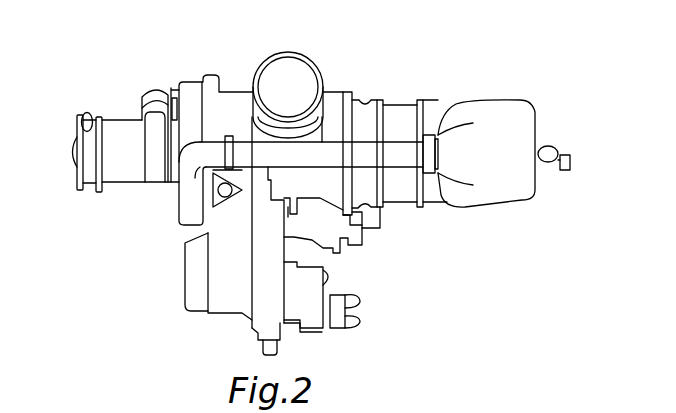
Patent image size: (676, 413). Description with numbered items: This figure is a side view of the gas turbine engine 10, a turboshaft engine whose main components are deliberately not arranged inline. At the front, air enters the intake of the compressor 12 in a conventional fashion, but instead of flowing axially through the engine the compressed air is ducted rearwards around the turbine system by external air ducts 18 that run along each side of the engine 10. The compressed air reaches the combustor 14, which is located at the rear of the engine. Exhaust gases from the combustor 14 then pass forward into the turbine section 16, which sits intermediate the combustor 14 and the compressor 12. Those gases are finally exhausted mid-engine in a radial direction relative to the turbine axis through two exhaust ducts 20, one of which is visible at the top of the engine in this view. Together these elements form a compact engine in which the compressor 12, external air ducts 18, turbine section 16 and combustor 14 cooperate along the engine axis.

The gas turbine engine 10 is at (108, 48).
The compressor 12 is at (125, 125).
The combustor 14 is at (480, 100).
The turbine section 16 is at (368, 100).
The external air duct 18 is at (392, 162).
The exhaust duct 20 is at (290, 52).